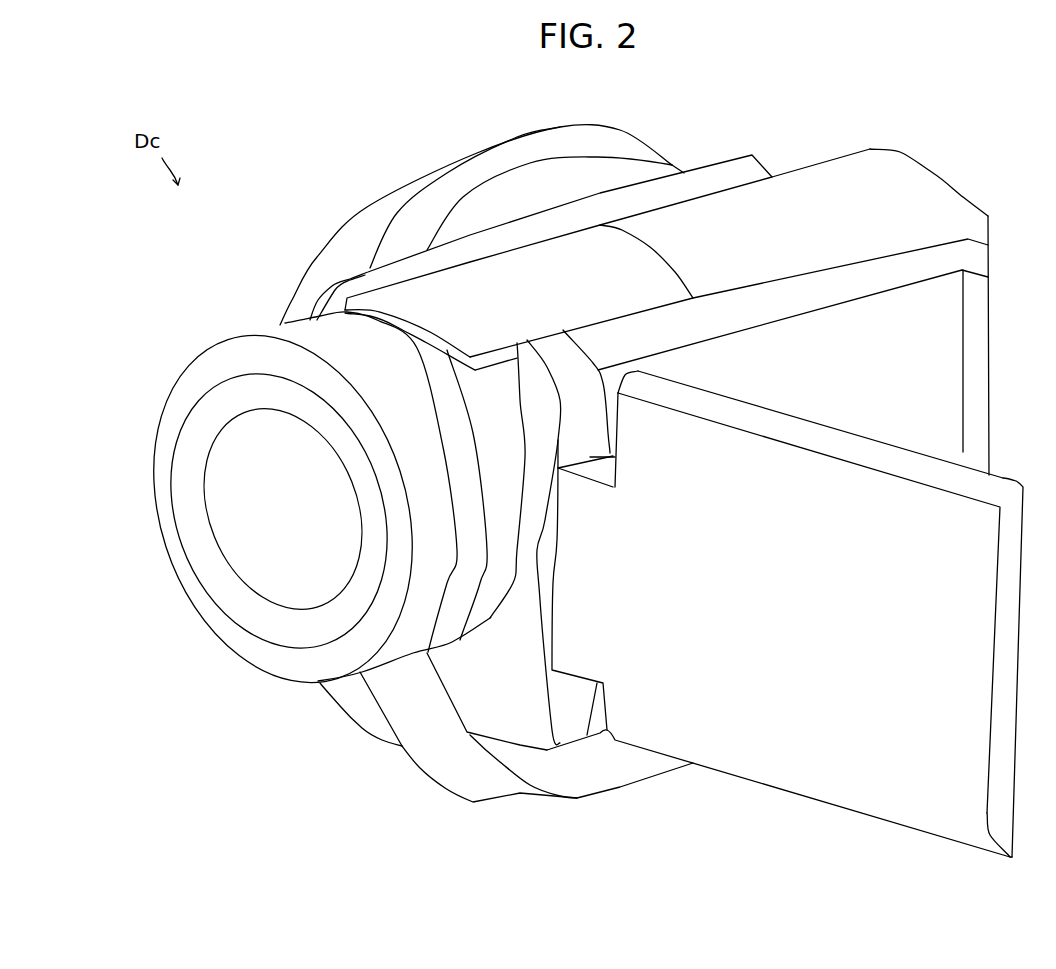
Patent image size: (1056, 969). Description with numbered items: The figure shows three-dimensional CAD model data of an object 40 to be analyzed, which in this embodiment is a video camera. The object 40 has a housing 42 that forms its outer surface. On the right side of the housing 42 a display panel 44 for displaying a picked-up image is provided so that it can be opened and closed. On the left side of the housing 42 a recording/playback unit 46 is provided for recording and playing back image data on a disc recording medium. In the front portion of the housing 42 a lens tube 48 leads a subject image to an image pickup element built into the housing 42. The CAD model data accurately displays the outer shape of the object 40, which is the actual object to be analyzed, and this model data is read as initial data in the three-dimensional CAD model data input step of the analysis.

The object to be analyzed 40 is at (838, 150).
The housing 42 is at (940, 195).
The display panel 44 is at (947, 523).
The recording/playback unit 46 is at (383, 203).
The lens tube 48 is at (192, 428).